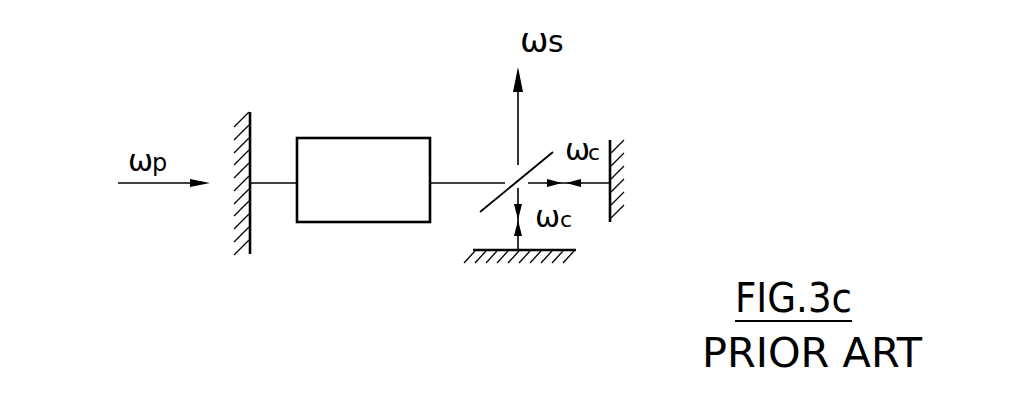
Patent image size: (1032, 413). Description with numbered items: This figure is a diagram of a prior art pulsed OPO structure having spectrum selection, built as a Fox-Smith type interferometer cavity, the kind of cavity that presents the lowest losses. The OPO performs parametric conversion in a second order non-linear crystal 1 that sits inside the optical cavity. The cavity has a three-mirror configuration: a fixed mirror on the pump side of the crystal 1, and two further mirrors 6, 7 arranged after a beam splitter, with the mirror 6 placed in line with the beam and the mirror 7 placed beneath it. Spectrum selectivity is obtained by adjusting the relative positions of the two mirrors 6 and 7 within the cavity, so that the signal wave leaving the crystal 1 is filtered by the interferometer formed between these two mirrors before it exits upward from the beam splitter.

The second order non-linear crystal 1 is at (348, 223).
The mirror 6 is at (644, 136).
The mirror 7 is at (491, 272).